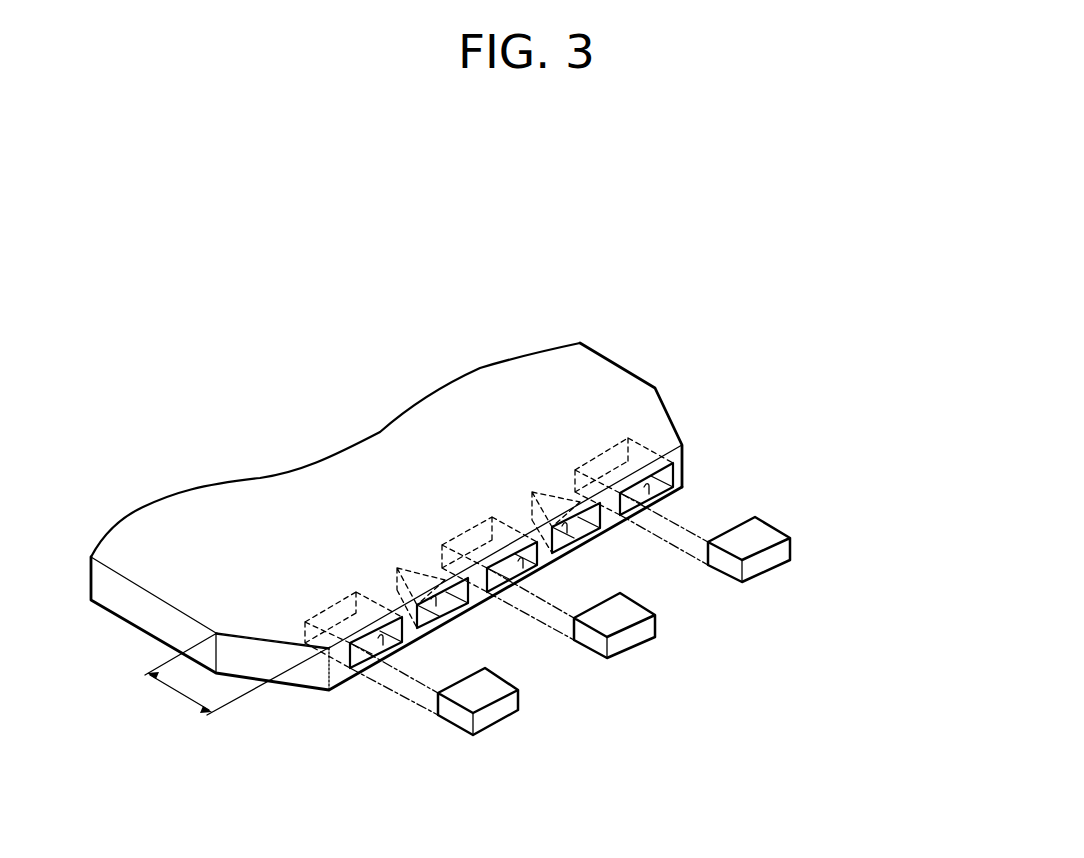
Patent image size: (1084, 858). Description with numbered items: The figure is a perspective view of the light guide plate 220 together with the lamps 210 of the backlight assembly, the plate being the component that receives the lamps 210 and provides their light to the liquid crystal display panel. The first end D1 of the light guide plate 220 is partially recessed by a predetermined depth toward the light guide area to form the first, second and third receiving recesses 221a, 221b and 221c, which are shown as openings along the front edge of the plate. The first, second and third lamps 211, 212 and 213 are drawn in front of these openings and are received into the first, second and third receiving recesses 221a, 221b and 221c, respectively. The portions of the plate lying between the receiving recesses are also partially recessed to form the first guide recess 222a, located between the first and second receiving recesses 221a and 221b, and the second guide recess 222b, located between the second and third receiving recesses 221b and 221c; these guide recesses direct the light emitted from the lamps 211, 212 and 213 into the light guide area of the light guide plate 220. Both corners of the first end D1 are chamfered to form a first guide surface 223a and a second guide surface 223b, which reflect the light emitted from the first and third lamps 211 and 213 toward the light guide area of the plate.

The lamps 210 is at (664, 624).
The first lamp 211 is at (495, 715).
The second lamp 212 is at (630, 640).
The third lamp 213 is at (768, 560).
The light guide plate 220 is at (620, 351).
The first receiving recess 221a is at (393, 652).
The second receiving recess 221b is at (536, 577).
The third receiving recess 221c is at (672, 502).
The first guide recess 222a is at (436, 598).
The second guide recess 222b is at (567, 526).
The first guide surface 223a is at (298, 678).
The second guide surface 223b is at (673, 415).
The first end D1 is at (237, 675).